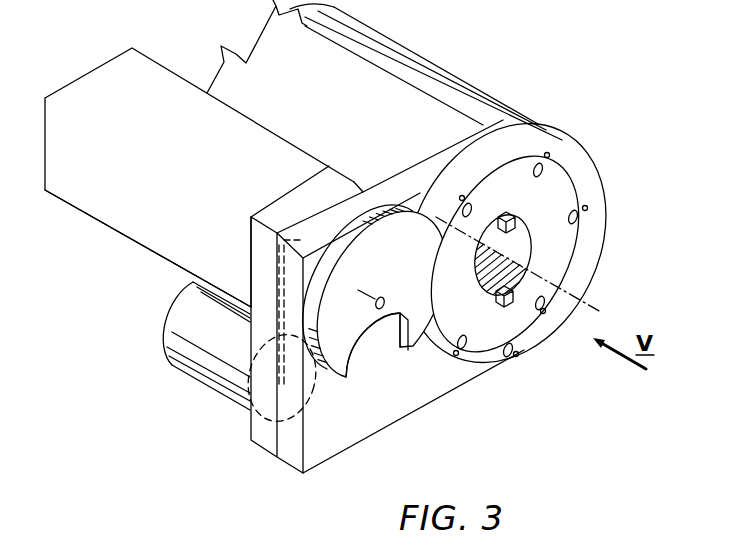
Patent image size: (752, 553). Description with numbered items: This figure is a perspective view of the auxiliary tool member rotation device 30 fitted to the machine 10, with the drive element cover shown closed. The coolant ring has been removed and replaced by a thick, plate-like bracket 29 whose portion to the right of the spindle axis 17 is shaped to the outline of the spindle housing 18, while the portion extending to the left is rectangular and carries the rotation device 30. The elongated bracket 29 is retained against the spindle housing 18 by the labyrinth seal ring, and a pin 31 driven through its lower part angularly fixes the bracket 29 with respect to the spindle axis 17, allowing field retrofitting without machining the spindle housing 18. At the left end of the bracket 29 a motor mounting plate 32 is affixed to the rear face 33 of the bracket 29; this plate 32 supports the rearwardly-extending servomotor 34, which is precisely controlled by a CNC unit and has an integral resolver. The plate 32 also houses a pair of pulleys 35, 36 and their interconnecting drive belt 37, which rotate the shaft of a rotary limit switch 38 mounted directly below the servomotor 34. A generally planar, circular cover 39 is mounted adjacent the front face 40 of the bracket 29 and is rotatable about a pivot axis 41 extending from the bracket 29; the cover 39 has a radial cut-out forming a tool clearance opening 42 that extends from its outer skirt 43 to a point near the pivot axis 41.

The machine 10 is at (455, 50).
The spindle axis 17 is at (592, 298).
The spindle housing 18 is at (478, 88).
The bracket 29 is at (430, 410).
The auxiliary servodriven tool member rotation device 30 is at (156, 258).
The pin 31 is at (517, 349).
The motor mounting plate 32 is at (346, 171).
The rear face 33 is at (382, 187).
The servomotor 34 is at (190, 231).
The pulley 35 is at (303, 240).
The pulley 36 is at (254, 404).
The drive belt 37 is at (277, 275).
The rotary limit switch 38 is at (222, 346).
The cover 39 is at (403, 262).
The front face 40 is at (372, 420).
The pivot axis 41 is at (362, 293).
The tool clearance opening 42 is at (350, 369).
The outer skirt 43 is at (415, 210).